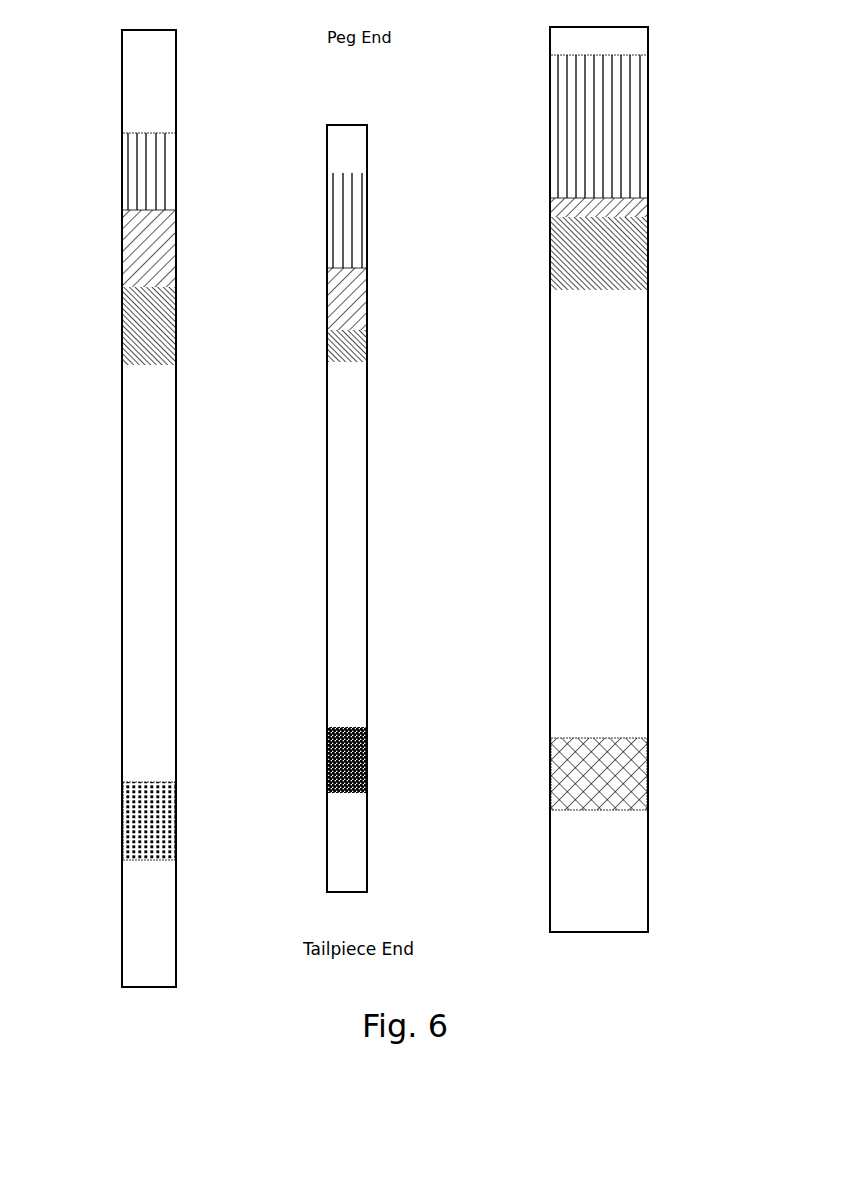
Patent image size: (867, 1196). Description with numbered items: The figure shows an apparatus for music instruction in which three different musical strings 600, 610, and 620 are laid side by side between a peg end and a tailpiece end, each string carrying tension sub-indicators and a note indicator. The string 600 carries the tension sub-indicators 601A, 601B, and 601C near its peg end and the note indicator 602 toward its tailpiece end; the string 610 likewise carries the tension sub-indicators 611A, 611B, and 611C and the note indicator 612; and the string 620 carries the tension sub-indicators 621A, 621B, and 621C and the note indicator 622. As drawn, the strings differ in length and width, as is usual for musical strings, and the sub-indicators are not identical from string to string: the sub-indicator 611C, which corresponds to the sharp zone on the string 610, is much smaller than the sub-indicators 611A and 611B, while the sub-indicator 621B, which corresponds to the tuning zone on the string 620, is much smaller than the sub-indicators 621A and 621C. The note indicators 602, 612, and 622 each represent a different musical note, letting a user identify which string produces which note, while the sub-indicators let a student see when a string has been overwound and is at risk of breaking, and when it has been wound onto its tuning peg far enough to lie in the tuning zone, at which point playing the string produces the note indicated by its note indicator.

The string 600 is at (105, 583).
The tension sub-indicator 601A is at (178, 173).
The tension sub-indicator 601B is at (178, 250).
The tension sub-indicator 601C is at (178, 327).
The note indicator 602 is at (120, 812).
The string 610 is at (310, 565).
The tension sub-indicator 611A is at (369, 220).
The tension sub-indicator 611B is at (370, 298).
The tension sub-indicator 611C is at (370, 345).
The note indicator 612 is at (323, 752).
The string 620 is at (532, 553).
The tension sub-indicator 621A is at (651, 100).
The tension sub-indicator 621B is at (650, 207).
The tension sub-indicator 621C is at (650, 255).
The note indicator 622 is at (548, 772).